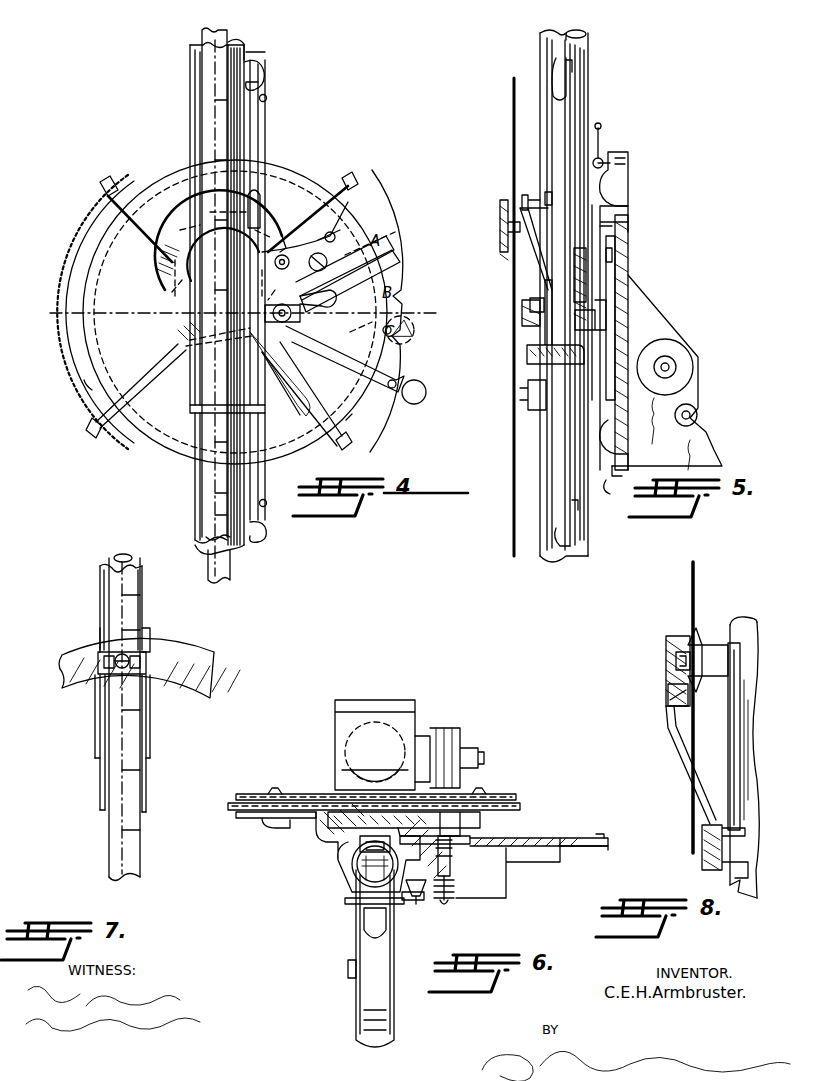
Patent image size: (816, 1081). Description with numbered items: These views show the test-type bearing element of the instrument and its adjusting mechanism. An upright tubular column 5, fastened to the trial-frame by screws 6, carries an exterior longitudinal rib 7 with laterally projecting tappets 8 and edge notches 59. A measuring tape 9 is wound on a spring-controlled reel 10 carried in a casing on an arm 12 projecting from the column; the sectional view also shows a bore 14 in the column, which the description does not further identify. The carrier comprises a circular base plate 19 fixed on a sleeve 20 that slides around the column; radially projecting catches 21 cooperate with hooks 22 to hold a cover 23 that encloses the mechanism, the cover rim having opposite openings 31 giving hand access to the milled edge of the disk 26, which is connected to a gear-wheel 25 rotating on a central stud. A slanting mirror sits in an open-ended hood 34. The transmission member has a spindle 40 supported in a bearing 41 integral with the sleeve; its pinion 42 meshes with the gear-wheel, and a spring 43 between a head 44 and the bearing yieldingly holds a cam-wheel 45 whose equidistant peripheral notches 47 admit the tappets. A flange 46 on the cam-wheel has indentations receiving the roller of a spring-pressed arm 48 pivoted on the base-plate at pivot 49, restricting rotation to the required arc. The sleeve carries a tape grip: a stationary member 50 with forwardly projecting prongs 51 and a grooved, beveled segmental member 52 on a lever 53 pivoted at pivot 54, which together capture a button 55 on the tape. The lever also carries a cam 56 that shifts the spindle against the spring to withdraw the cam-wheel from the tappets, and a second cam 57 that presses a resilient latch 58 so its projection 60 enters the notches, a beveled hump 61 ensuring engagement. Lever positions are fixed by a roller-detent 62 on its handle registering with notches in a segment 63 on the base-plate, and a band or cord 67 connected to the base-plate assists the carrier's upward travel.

In FIG. 4, the tubular column 5 is at (232, 46).
In FIG. 5, the tubular column 5 is at (590, 68).
In FIG. 7, the tubular column 5 is at (132, 560).
In FIG. 8, the tubular column 5 is at (758, 650).
In FIG. 4, the screws 6 is at (239, 313).
In FIG. 4, the longitudinally extending rib 7 is at (265, 134).
In FIG. 5, the longitudinally extending rib 7 is at (568, 126).
In FIG. 4, the tappets 8 is at (267, 100).
In FIG. 5, the tappets 8 is at (570, 106).
In FIG. 7, the tappets 8 is at (122, 718).
In FIG. 4, the measuring tape 9 is at (198, 26).
In FIG. 5, the measuring tape 9 is at (510, 98).
In FIG. 7, the measuring tape 9 is at (122, 746).
In FIG. 6, the measuring tape 9 is at (370, 878).
In FIG. 8, the measuring tape 9 is at (690, 596).
In FIG. 6, the spring-controlled reel 10 is at (396, 968).
In FIG. 6, the arm 12 is at (348, 974).
In FIG. 6, the bore 14 is at (356, 852).
In FIG. 4, the circular base plate 19 is at (96, 272).
In FIG. 5, the circular base plate 19 is at (612, 478).
In FIG. 6, the circular base plate 19 is at (240, 818).
In FIG. 4, the sleeve 20 is at (190, 408).
In FIG. 5, the sleeve 20 is at (600, 222).
In FIG. 6, the sleeve 20 is at (342, 870).
In FIG. 8, the sleeve 20 is at (740, 746).
In FIG. 4, the catches 21 is at (102, 193).
In FIG. 5, the catches 21 is at (630, 205).
In FIG. 4, the hooks 22 is at (112, 180).
In FIG. 5, the hooks 22 is at (626, 184).
In FIG. 5, the cover 23 is at (630, 266).
In FIG. 6, the cover 23 is at (244, 794).
In FIG. 6, the gear-wheel 25 is at (340, 832).
In FIG. 4, the disk 26 is at (84, 350).
In FIG. 5, the disk 26 is at (630, 252).
In FIG. 6, the disk 26 is at (230, 806).
In FIG. 4, the openings 31 is at (76, 384).
In FIG. 5, the open-ended hood 34 is at (680, 308).
In FIG. 6, the open-ended hood 34 is at (384, 704).
In FIG. 6, the spindle 40 is at (452, 866).
In FIG. 6, the bearing 41 is at (468, 882).
In FIG. 6, the pinion 42 is at (446, 796).
In FIG. 6, the spring 43 is at (478, 892).
In FIG. 4, the head 44 is at (338, 294).
In FIG. 5, the head 44 is at (522, 308).
In FIG. 6, the head 44 is at (446, 904).
In FIG. 4, the cam-wheel 45 is at (326, 266).
In FIG. 6, the cam-wheel 45 is at (474, 842).
In FIG. 4, the flange 46 is at (300, 270).
In FIG. 5, the flange 46 is at (590, 296).
In FIG. 6, the flange 46 is at (486, 826).
In FIG. 4, the peripheral notches 47 is at (292, 306).
In FIG. 5, the peripheral notches 47 is at (598, 312).
In FIG. 4, the spring-pressed arm 48 is at (336, 232).
In FIG. 4, the pivot 49 is at (290, 258).
In FIG. 5, the stationary member 50 is at (526, 196).
In FIG. 7, the stationary member 50 is at (146, 640).
In FIG. 8, the stationary member 50 is at (706, 636).
In FIG. 7, the prongs 51 is at (142, 654).
In FIG. 4, the segmental member 52 is at (282, 232).
In FIG. 5, the segmental member 52 is at (506, 222).
In FIG. 7, the segmental member 52 is at (212, 656).
In FIG. 8, the segmental member 52 is at (666, 680).
In FIG. 4, the lever 53 is at (428, 388).
In FIG. 5, the lever 53 is at (518, 298).
In FIG. 6, the lever 53 is at (590, 852).
In FIG. 8, the lever 53 is at (672, 750).
In FIG. 4, the pivot 54 is at (200, 340).
In FIG. 6, the pivot 54 is at (366, 906).
In FIG. 7, the button 55 is at (106, 654).
In FIG. 8, the button 55 is at (676, 660).
In FIG. 4, the cam 56 is at (300, 420).
In FIG. 4, the second cam 57 is at (310, 300).
In FIG. 4, the resilient latch 58 is at (260, 200).
In FIG. 5, the resilient latch 58 is at (534, 252).
In FIG. 6, the resilient latch 58 is at (416, 904).
In FIG. 4, the notches 59 is at (264, 80).
In FIG. 5, the notches 59 is at (568, 86).
In FIG. 5, the projection 60 is at (544, 196).
In FIG. 5, the beveled hump 61 is at (510, 306).
In FIG. 4, the roller-detent 62 is at (400, 380).
In FIG. 5, the roller-detent 62 is at (672, 366).
In FIG. 6, the roller-detent 62 is at (586, 842).
In FIG. 4, the segment 63 is at (402, 312).
In FIG. 5, the segment 63 is at (630, 276).
In FIG. 6, the segment 63 is at (524, 840).
In FIG. 5, the band or cord 67 is at (604, 136).